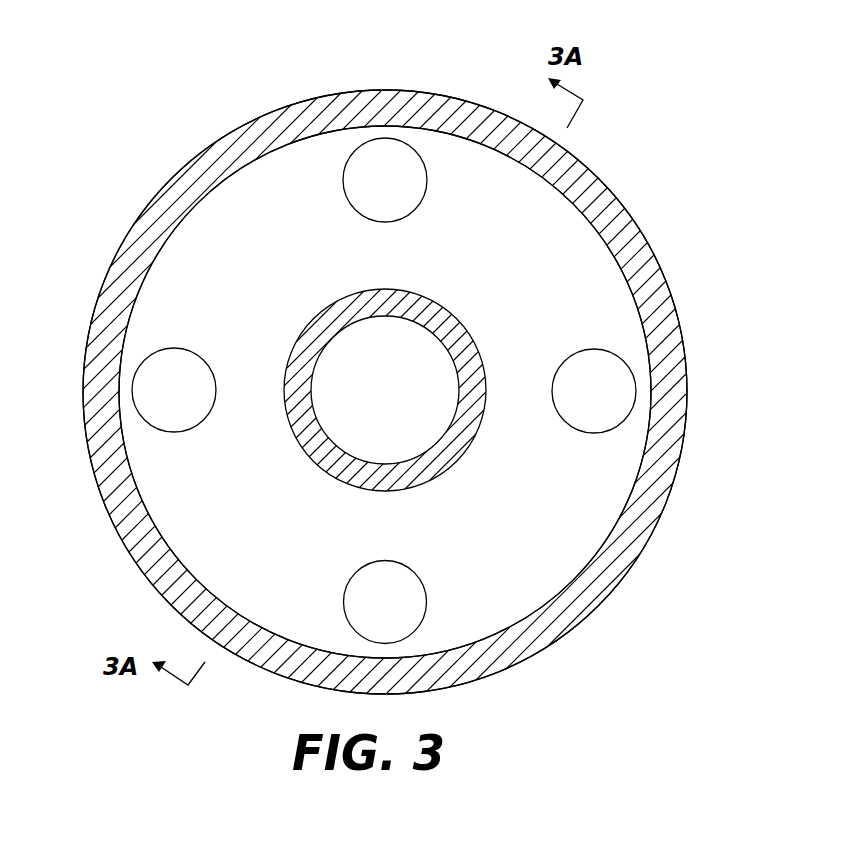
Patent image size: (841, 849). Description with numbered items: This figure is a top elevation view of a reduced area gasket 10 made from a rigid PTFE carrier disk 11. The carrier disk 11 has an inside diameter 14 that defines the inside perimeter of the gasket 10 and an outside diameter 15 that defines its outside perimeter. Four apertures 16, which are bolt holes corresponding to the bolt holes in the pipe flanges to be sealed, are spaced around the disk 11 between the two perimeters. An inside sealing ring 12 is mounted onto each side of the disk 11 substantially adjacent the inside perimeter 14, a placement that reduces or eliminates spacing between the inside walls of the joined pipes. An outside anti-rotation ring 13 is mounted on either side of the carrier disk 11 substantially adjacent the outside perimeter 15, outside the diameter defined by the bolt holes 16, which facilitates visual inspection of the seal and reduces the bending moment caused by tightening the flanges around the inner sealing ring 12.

The gasket 10 is at (607, 662).
The carrier disk 11 is at (577, 228).
The inside sealing ring 12 is at (467, 428).
The outside anti-rotation ring 13 is at (613, 555).
The inside diameter 14 is at (457, 368).
The outside diameter 15 is at (384, 88).
The apertures 16 is at (148, 383).